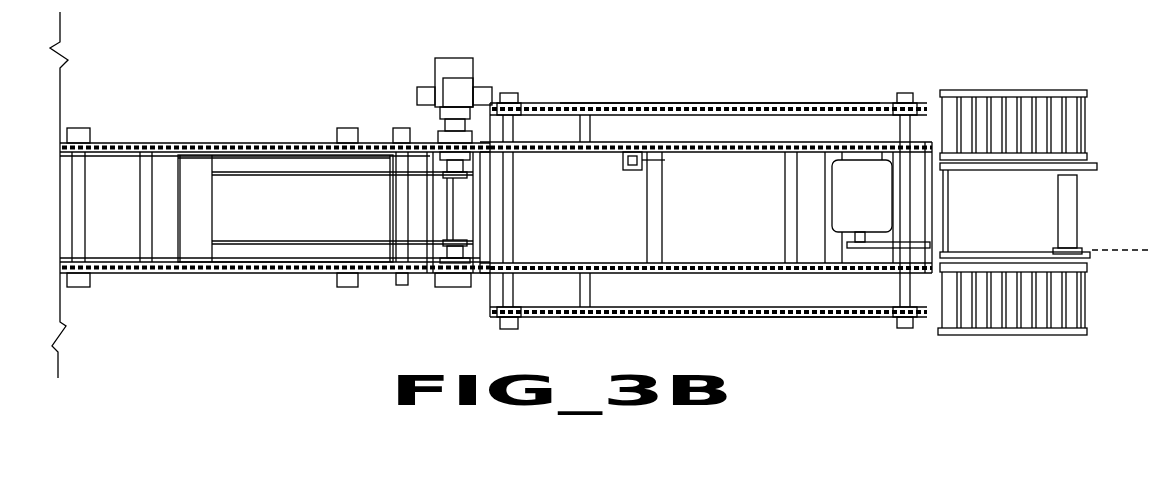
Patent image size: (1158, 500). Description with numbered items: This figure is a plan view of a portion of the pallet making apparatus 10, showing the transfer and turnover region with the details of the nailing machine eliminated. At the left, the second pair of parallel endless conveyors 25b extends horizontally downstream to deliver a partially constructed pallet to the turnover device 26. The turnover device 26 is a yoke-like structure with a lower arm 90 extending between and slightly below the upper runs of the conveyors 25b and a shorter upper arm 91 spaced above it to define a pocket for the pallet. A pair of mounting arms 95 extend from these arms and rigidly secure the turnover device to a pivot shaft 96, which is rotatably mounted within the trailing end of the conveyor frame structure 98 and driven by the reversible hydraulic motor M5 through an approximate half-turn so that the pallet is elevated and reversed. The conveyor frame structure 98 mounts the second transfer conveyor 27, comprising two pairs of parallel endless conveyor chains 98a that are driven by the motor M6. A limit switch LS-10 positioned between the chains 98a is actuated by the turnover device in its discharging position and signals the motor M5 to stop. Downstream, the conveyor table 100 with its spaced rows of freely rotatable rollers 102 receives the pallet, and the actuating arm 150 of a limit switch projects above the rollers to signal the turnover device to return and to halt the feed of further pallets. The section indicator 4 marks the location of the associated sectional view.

The pallet making apparatus 10 is at (862, 56).
The second pair of parallel endless conveyors 25b is at (123, 157).
The turnover device 26 is at (248, 163).
The second transfer conveyor 27 is at (672, 108).
The lower arm 90 is at (198, 160).
The upper arm 91 is at (292, 158).
The mounting arms 95 is at (322, 175).
The pivot shaft 96 is at (455, 208).
The conveyor frame structure 98 is at (483, 276).
The endless conveyor chains 98a is at (718, 111).
The conveyor table 100 is at (1042, 86).
The rollers 102 is at (1032, 156).
The actuating arm 150 is at (1060, 213).
The reversible hydraulic motor M5 is at (462, 88).
The motor M6 is at (882, 207).
The limit switch LS-10 is at (630, 168).
The section line 4 is at (1130, 258).